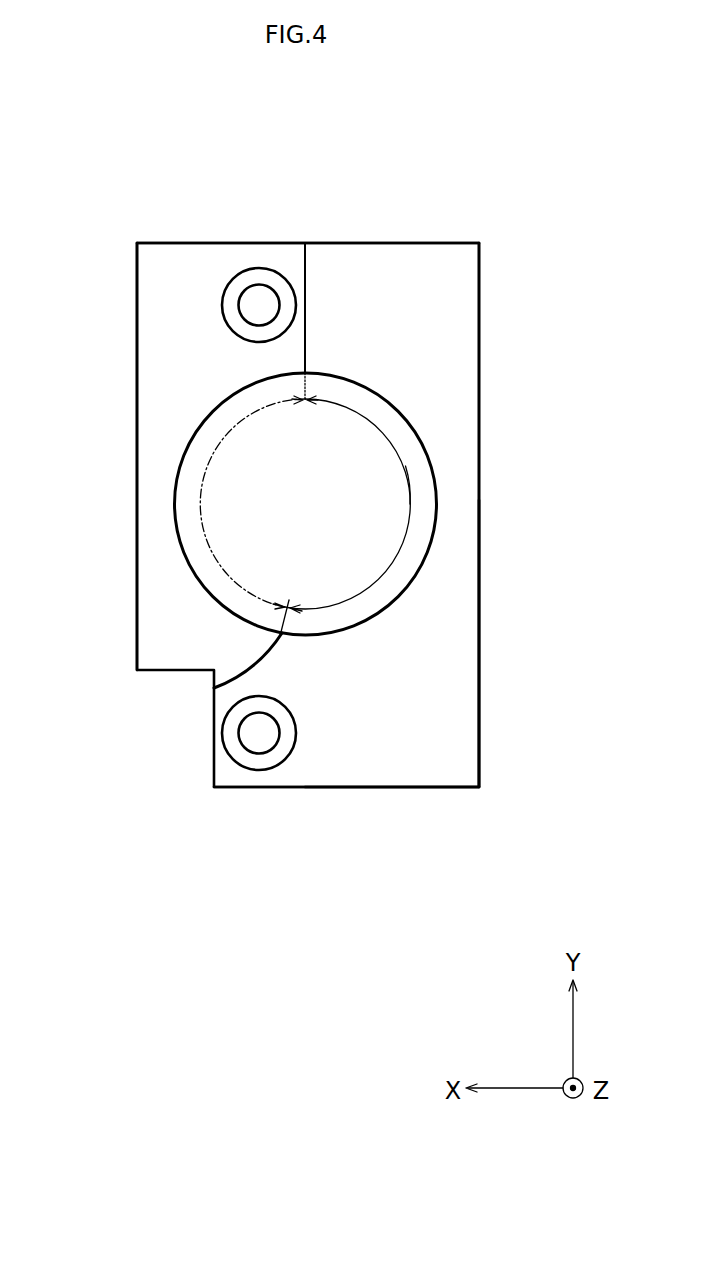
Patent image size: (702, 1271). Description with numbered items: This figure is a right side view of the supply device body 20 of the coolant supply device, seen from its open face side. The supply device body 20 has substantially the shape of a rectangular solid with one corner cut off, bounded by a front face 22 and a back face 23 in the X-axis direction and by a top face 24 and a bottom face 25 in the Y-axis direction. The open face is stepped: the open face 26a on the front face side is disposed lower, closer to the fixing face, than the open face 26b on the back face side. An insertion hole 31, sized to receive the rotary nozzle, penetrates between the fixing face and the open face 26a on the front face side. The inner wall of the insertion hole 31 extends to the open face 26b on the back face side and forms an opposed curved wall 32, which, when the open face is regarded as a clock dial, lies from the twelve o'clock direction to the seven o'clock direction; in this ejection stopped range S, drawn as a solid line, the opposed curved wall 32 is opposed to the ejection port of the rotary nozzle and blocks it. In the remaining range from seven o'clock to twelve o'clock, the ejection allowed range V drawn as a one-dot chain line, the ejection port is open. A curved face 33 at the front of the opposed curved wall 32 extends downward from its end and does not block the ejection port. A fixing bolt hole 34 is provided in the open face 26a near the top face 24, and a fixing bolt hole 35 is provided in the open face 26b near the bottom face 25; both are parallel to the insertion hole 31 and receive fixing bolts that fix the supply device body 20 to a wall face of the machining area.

The supply device body 20 is at (88, 300).
The front face 22 is at (137, 426).
The back face 23 is at (481, 418).
The top face 24 is at (408, 242).
The bottom face 25 is at (341, 788).
The open face on the front face side 26a is at (168, 282).
The open face on the back face side 26b is at (432, 747).
The insertion hole 31 is at (240, 530).
The opposed curved wall 32 is at (427, 552).
The curved face 33 is at (246, 667).
The fixing bolt hole 34 is at (260, 297).
The fixing bolt hole 35 is at (260, 742).
The ejection allowed range V is at (200, 493).
The ejection stopped range S is at (410, 485).